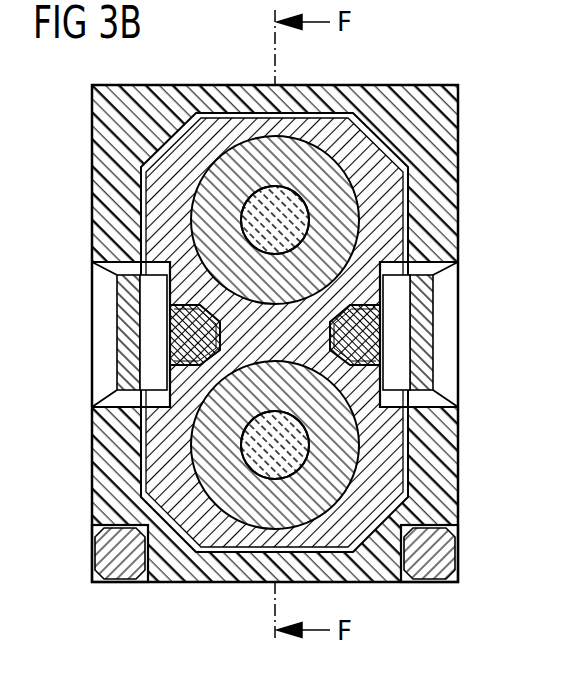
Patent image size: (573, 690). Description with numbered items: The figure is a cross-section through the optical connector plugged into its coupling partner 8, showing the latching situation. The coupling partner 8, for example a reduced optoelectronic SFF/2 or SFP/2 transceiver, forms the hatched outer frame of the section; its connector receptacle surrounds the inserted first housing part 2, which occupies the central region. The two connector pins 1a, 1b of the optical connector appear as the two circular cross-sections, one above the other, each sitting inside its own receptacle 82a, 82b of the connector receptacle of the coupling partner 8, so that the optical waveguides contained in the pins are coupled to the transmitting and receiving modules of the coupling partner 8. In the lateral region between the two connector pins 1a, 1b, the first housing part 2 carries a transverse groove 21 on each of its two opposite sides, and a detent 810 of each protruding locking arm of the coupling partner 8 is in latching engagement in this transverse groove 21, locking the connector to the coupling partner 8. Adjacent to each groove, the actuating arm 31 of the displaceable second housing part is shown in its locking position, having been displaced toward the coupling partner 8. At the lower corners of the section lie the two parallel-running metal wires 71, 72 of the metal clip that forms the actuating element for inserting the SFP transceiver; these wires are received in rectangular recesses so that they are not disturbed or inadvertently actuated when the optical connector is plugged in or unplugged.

The connector pin 1a is at (290, 222).
The connector pin 1b is at (290, 447).
The first housing part 2 is at (340, 131).
The coupling partner 8 is at (398, 102).
The transverse groove 21 is at (143, 266).
The actuating arm 31 is at (187, 327).
The metal wire 71 is at (432, 568).
The metal wire 72 is at (118, 563).
The receptacle 82a is at (208, 208).
The receptacle 82b is at (208, 460).
The detent 810 is at (130, 312).